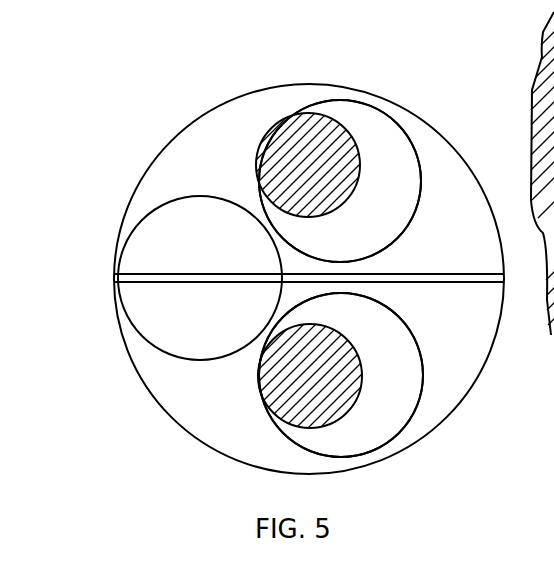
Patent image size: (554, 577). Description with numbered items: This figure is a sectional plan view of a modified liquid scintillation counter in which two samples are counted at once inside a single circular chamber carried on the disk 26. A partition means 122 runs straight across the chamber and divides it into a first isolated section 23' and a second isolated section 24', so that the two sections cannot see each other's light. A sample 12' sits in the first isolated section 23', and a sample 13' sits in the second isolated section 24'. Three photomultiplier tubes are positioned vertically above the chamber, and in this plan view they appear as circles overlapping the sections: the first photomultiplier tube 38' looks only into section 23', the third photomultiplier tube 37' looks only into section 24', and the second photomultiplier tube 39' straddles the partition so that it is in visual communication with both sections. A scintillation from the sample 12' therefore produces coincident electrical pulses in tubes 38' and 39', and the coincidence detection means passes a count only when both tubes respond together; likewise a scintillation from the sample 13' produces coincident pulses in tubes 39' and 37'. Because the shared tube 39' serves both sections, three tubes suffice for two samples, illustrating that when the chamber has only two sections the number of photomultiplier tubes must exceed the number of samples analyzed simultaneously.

The disk 26 is at (125, 340).
The partition means 122 is at (140, 274).
The second photomultiplier tube 39' is at (200, 278).
The second isolated section 24' is at (304, 181).
The third photomultiplier tube 37' is at (340, 181).
The first isolated section 23' is at (361, 375).
The first photomultiplier tube 38' is at (341, 375).
The sample 13' is at (305, 131).
The sample 12' is at (301, 404).